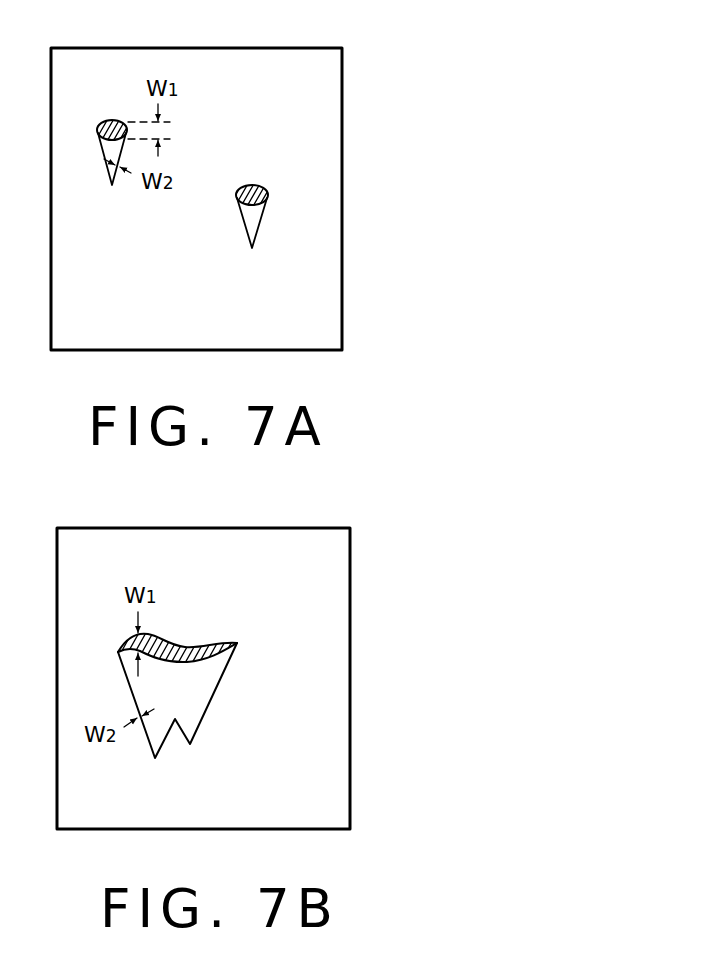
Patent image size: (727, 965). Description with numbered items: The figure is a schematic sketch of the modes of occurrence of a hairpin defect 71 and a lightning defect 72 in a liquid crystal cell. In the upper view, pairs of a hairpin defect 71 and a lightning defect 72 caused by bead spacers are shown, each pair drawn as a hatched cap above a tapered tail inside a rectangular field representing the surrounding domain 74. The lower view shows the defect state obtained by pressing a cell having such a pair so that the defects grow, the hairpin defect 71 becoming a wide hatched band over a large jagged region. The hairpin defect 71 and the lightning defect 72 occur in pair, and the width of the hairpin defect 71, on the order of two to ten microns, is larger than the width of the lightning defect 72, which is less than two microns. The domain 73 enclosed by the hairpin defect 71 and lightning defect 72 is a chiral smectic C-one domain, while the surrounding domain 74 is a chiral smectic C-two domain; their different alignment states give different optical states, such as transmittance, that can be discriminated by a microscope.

In FIG. 7A, the hairpin defect 71 is at (266, 186).
In FIG. 7B, the hairpin defect 71 is at (193, 643).
In FIG. 7A, the lightning defect 72 is at (267, 207).
In FIG. 7B, the lightning defect 72 is at (225, 670).
In FIG. 7A, the domain 73 is at (252, 226).
In FIG. 7B, the domain 73 is at (195, 698).
In FIG. 7A, the surrounding domain 74 is at (315, 291).
In FIG. 7B, the surrounding domain 74 is at (317, 750).